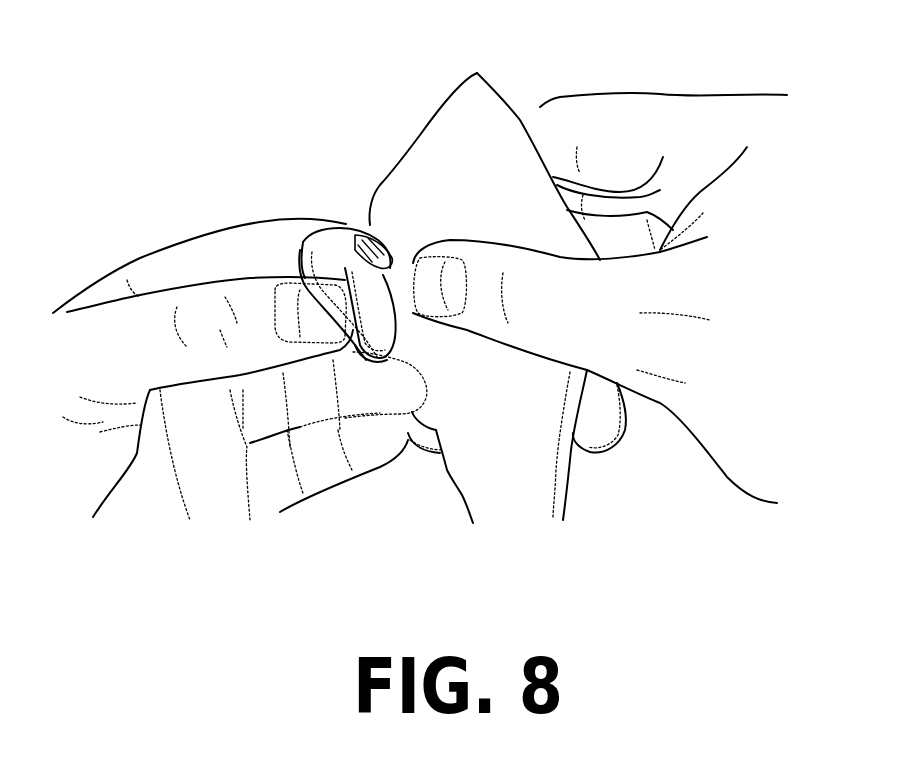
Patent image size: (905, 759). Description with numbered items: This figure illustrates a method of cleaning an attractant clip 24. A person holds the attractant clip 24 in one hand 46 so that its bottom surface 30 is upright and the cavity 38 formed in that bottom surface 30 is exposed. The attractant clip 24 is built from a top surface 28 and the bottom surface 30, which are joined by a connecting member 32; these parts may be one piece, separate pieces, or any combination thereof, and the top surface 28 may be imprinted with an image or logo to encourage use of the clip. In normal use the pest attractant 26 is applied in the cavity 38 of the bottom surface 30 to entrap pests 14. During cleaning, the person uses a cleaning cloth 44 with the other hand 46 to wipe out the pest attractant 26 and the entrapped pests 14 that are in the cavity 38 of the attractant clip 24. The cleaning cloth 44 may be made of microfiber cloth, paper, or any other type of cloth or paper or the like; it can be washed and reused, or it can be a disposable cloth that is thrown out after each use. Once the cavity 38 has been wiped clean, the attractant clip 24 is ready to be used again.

The pests 14 is at (380, 262).
The attractant clip 24 is at (341, 200).
The pest attractant 26 is at (352, 231).
The top surface 28 is at (304, 263).
The bottom surface 30 is at (343, 228).
The connecting member 32 is at (385, 362).
The cavity 38 is at (305, 258).
The cleaning cloth 44 is at (480, 100).
The hand 46 is at (697, 113).